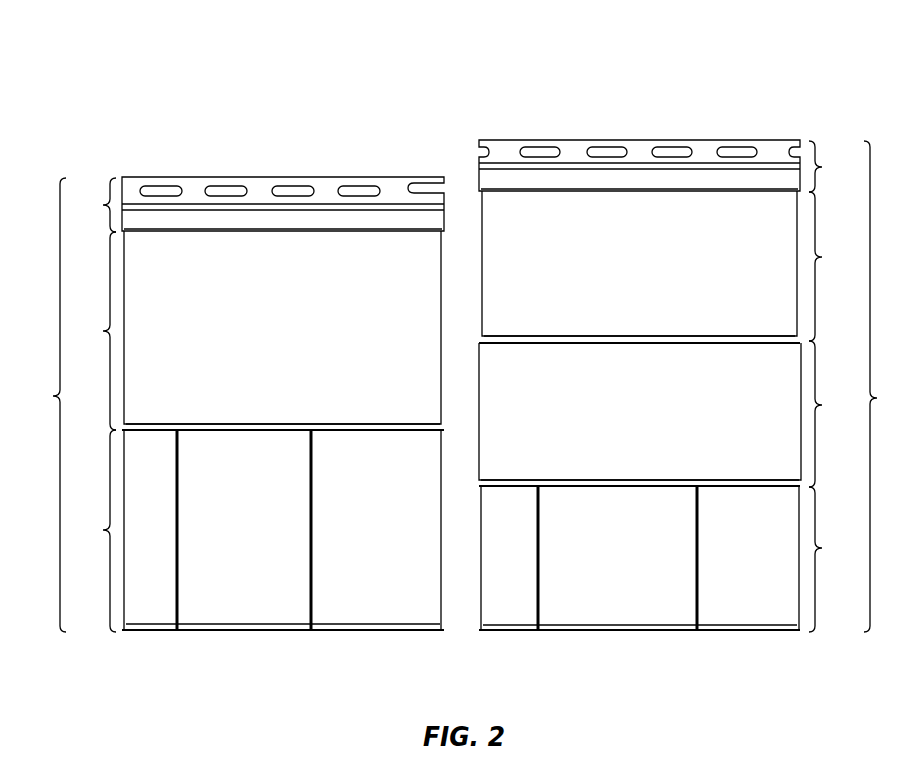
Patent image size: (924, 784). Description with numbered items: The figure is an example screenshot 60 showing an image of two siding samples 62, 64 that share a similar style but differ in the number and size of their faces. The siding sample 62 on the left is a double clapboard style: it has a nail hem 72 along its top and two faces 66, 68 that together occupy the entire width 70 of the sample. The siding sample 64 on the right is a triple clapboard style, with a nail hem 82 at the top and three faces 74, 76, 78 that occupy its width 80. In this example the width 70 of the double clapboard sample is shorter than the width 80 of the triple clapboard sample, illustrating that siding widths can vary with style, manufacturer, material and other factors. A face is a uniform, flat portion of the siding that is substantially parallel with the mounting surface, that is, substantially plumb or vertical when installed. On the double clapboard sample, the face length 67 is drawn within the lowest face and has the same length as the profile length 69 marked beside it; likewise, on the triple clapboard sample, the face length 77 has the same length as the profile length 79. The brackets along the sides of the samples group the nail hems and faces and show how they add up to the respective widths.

The screenshot 60 is at (361, 57).
The siding sample 62 is at (305, 177).
The siding sample 64 is at (700, 140).
The face 66 is at (259, 330).
The face length 67 is at (178, 596).
The face 68 is at (260, 531).
The profile length 69 is at (312, 596).
The width 70 is at (46, 405).
The nail hem 72 is at (96, 205).
The face 74 is at (665, 267).
The face 76 is at (665, 414).
The face length 77 is at (539, 588).
The face 78 is at (665, 559).
The profile length 79 is at (698, 588).
The width 80 is at (884, 386).
The nail hem 82 is at (830, 166).